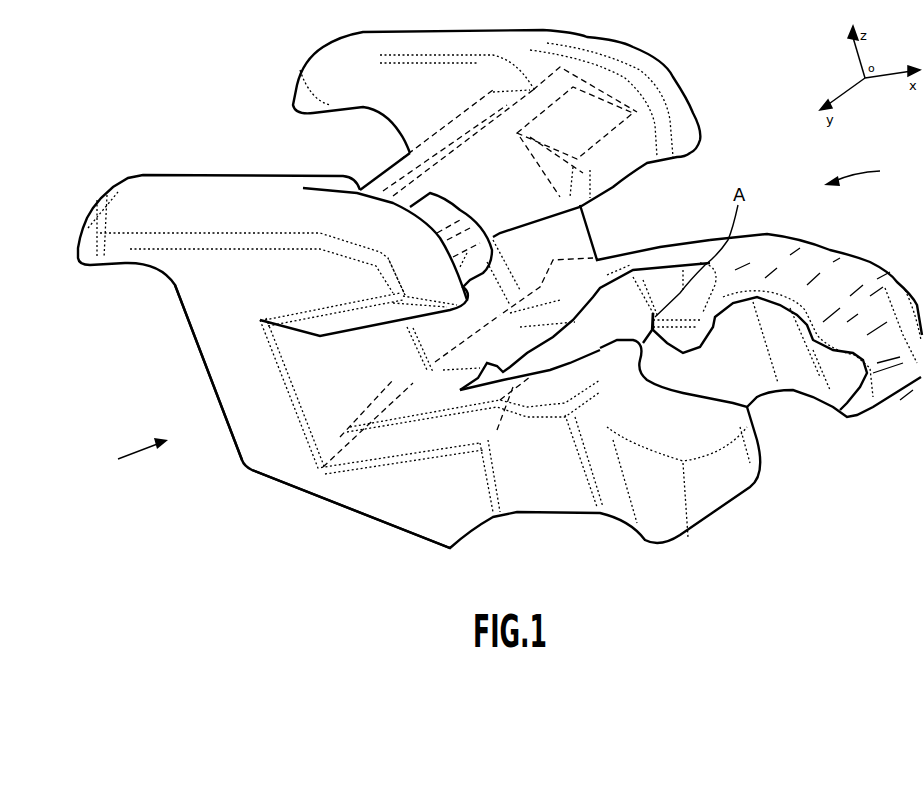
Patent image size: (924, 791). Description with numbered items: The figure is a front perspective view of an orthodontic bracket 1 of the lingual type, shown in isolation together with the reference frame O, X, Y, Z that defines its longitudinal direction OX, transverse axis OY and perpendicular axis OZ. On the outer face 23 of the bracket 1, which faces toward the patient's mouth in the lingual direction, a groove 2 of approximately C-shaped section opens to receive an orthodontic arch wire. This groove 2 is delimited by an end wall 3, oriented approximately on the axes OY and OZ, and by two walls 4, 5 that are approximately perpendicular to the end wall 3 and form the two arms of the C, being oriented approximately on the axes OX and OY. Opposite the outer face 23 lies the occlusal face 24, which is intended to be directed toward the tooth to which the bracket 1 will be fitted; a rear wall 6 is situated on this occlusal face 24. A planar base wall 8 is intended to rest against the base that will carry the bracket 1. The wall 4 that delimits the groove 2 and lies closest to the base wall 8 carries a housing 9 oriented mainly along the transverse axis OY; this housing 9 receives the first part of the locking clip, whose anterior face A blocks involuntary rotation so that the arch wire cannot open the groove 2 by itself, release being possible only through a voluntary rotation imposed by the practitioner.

The bracket 1 is at (226, 118).
The groove 2 is at (702, 193).
The end wall 3 is at (570, 242).
The wall 4 is at (737, 253).
The wall 5 is at (610, 180).
The rear wall 6 is at (217, 405).
The planar base wall 8 is at (302, 488).
The housing 9 is at (676, 275).
The outer face 23 is at (866, 174).
The occlusal face 24 is at (129, 456).